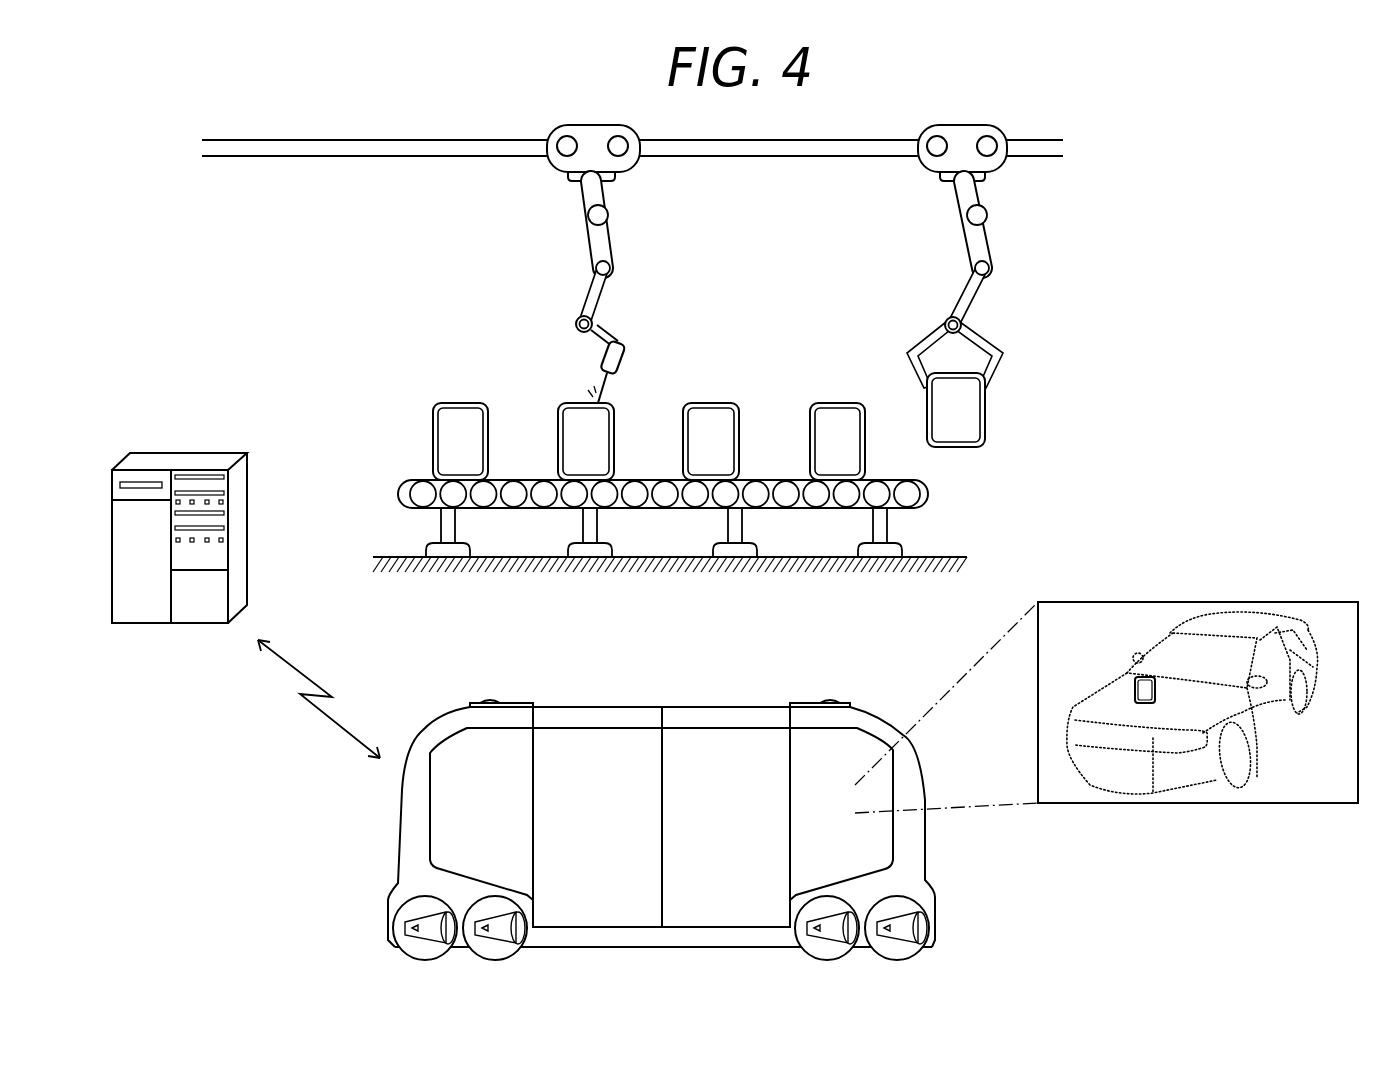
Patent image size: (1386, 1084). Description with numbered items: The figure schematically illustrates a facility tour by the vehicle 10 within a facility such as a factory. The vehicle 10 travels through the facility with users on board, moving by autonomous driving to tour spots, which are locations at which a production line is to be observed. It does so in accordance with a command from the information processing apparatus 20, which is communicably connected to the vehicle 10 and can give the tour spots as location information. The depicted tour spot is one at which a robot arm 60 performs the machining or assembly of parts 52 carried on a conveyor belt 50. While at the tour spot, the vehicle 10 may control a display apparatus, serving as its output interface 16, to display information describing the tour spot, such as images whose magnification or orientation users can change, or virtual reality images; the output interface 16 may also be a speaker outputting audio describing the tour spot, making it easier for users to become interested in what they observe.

The vehicle 10 is at (606, 707).
The output interface 16 is at (1196, 602).
The information processing apparatus 20 is at (247, 512).
The conveyor belt 50 is at (931, 492).
The parts 52 is at (715, 403).
The robot arm 60 is at (608, 232).